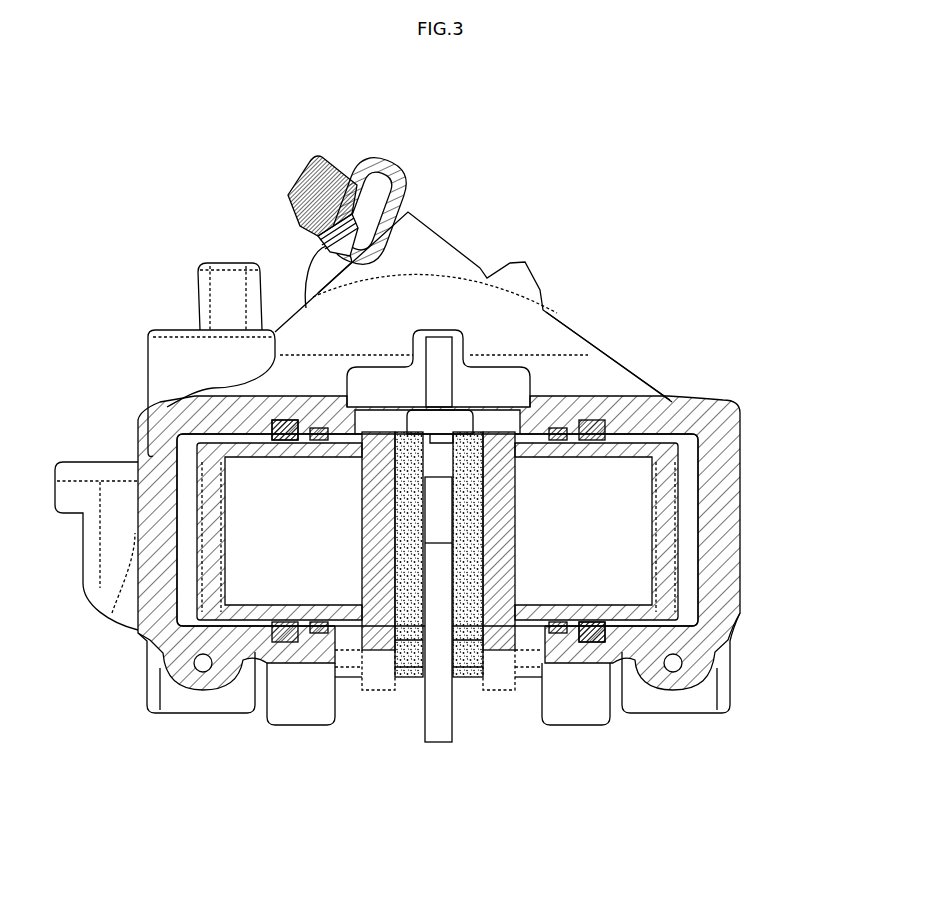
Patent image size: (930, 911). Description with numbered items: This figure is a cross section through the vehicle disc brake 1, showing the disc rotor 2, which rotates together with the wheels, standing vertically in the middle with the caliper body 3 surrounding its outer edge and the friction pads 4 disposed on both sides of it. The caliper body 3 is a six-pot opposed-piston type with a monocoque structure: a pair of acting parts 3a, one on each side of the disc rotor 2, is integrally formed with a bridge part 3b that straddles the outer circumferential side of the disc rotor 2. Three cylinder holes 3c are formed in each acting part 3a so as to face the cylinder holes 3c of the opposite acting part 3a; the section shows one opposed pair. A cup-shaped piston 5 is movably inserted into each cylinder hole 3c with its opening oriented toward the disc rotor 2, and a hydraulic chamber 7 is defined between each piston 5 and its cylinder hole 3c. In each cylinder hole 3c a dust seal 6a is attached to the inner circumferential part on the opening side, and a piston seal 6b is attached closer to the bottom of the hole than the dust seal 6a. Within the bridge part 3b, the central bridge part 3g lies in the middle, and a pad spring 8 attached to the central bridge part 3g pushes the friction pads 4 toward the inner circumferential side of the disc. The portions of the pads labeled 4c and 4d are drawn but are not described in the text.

The vehicle disc brake 1 is at (447, 102).
The disc rotor 2 is at (437, 745).
The caliper body 3 is at (133, 334).
The acting part 3a is at (150, 600).
The bridge part 3b is at (518, 280).
The cylinder hole 3c is at (270, 624).
The central bridge part 3g is at (455, 290).
The friction pad 4 is at (437, 561).
The back plate 4c is at (392, 495).
The lining 4d is at (373, 533).
The piston 5 is at (210, 527).
The dust seal 6a is at (317, 440).
The piston seal 6b is at (285, 440).
The hydraulic chamber 7 is at (187, 520).
The pad spring 8 is at (493, 392).